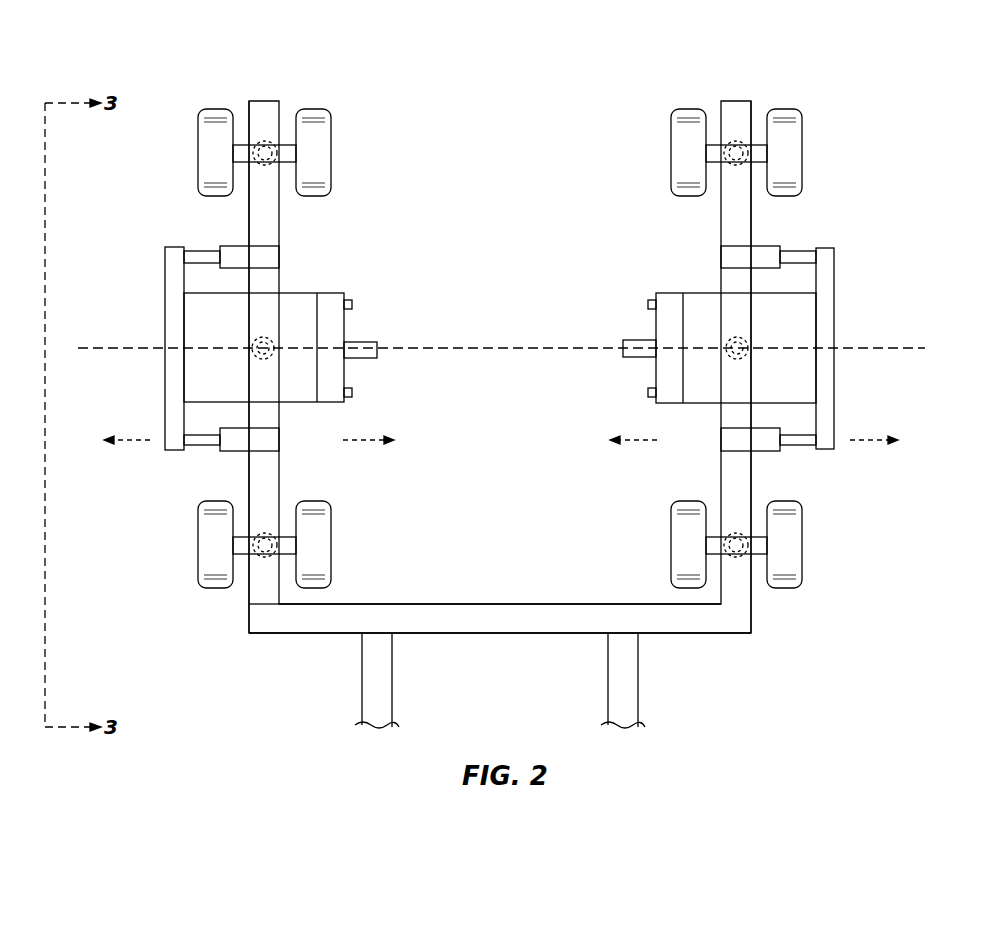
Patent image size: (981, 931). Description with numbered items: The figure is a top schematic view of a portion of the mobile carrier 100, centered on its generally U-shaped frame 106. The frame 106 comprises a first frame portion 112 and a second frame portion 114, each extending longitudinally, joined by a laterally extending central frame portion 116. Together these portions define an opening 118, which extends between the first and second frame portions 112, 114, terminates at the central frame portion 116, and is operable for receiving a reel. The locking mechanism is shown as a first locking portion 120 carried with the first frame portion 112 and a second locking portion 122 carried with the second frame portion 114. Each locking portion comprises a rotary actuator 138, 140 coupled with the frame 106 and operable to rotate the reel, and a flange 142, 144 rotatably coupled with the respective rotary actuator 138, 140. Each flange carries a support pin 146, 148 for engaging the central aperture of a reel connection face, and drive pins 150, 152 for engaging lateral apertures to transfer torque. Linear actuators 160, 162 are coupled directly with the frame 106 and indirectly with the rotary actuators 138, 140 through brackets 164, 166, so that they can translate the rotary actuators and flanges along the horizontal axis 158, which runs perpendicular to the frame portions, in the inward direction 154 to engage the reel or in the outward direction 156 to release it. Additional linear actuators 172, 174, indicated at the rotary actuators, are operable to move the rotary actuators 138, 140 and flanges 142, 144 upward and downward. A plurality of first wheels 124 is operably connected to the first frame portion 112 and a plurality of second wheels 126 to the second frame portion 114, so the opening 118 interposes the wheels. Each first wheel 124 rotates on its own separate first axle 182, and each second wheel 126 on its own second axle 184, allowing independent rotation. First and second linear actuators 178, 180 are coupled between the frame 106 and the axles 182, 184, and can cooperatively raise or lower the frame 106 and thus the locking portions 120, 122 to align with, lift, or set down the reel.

The mobile carrier 100 is at (882, 78).
The frame 106 is at (302, 641).
The first frame portion 112 is at (249, 240).
The second frame portion 114 is at (751, 240).
The central frame portion 116 is at (478, 634).
The opening 118 is at (499, 104).
The first locking portion 120 is at (277, 332).
The second locking portion 122 is at (728, 333).
The first wheels 124 is at (198, 152).
The second wheels 126 is at (671, 152).
The rotary actuator 138 is at (200, 337).
The rotary actuator 140 is at (797, 337).
The flange 142 is at (330, 293).
The flange 144 is at (669, 293).
The support pin 146 is at (377, 352).
The support pin 148 is at (623, 352).
The drive pins 150 is at (352, 305).
The drive pins 152 is at (648, 305).
The inward direction 154 is at (367, 446).
The outward direction 156 is at (124, 446).
The horizontal axis 158 is at (888, 350).
The linear actuators 160 is at (279, 257).
The linear actuators 162 is at (721, 257).
The bracket 164 is at (165, 283).
The bracket 166 is at (834, 285).
The linear actuator 172 is at (263, 360).
The linear actuator 174 is at (737, 360).
The first linear actuators 178 is at (262, 141).
The second linear actuators 180 is at (738, 141).
The first axles 182 is at (240, 140).
The second axles 184 is at (757, 143).